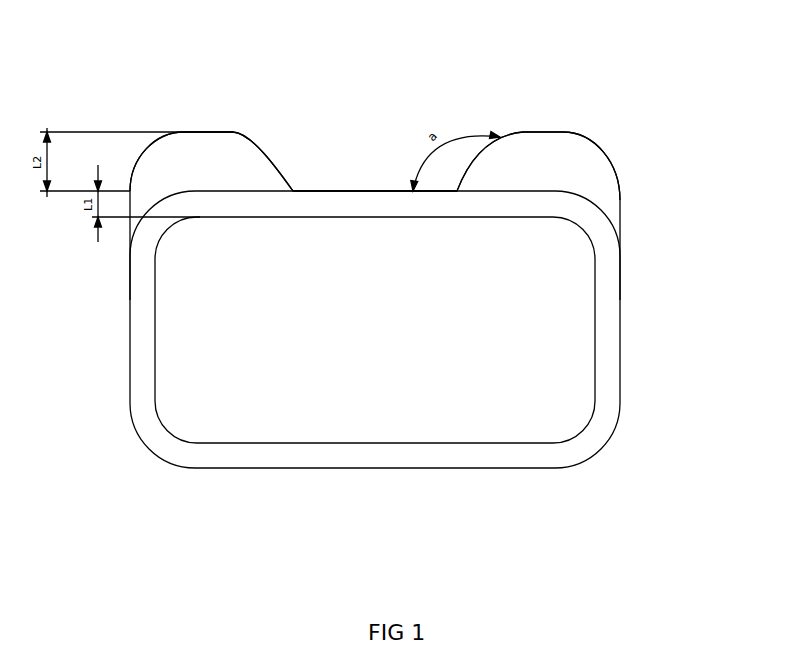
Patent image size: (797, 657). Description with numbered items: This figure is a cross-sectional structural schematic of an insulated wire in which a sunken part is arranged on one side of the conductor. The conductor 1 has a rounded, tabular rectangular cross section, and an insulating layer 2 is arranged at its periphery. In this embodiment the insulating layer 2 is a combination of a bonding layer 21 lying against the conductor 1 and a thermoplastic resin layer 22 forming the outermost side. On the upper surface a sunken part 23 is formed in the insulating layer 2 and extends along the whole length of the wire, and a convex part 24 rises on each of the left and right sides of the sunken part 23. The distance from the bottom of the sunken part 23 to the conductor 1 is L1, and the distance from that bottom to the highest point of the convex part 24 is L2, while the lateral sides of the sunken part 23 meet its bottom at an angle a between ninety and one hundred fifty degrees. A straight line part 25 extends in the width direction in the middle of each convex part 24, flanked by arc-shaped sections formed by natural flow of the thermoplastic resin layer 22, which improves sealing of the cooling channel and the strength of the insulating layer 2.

The conductor 1 is at (383, 407).
The insulating layer 2 is at (717, 230).
The bonding layer 21 is at (607, 356).
The thermoplastic resin layer 22 is at (601, 189).
The sunken part 23 is at (372, 167).
The convex part 24 is at (186, 149).
The straight line part 25 is at (543, 131).